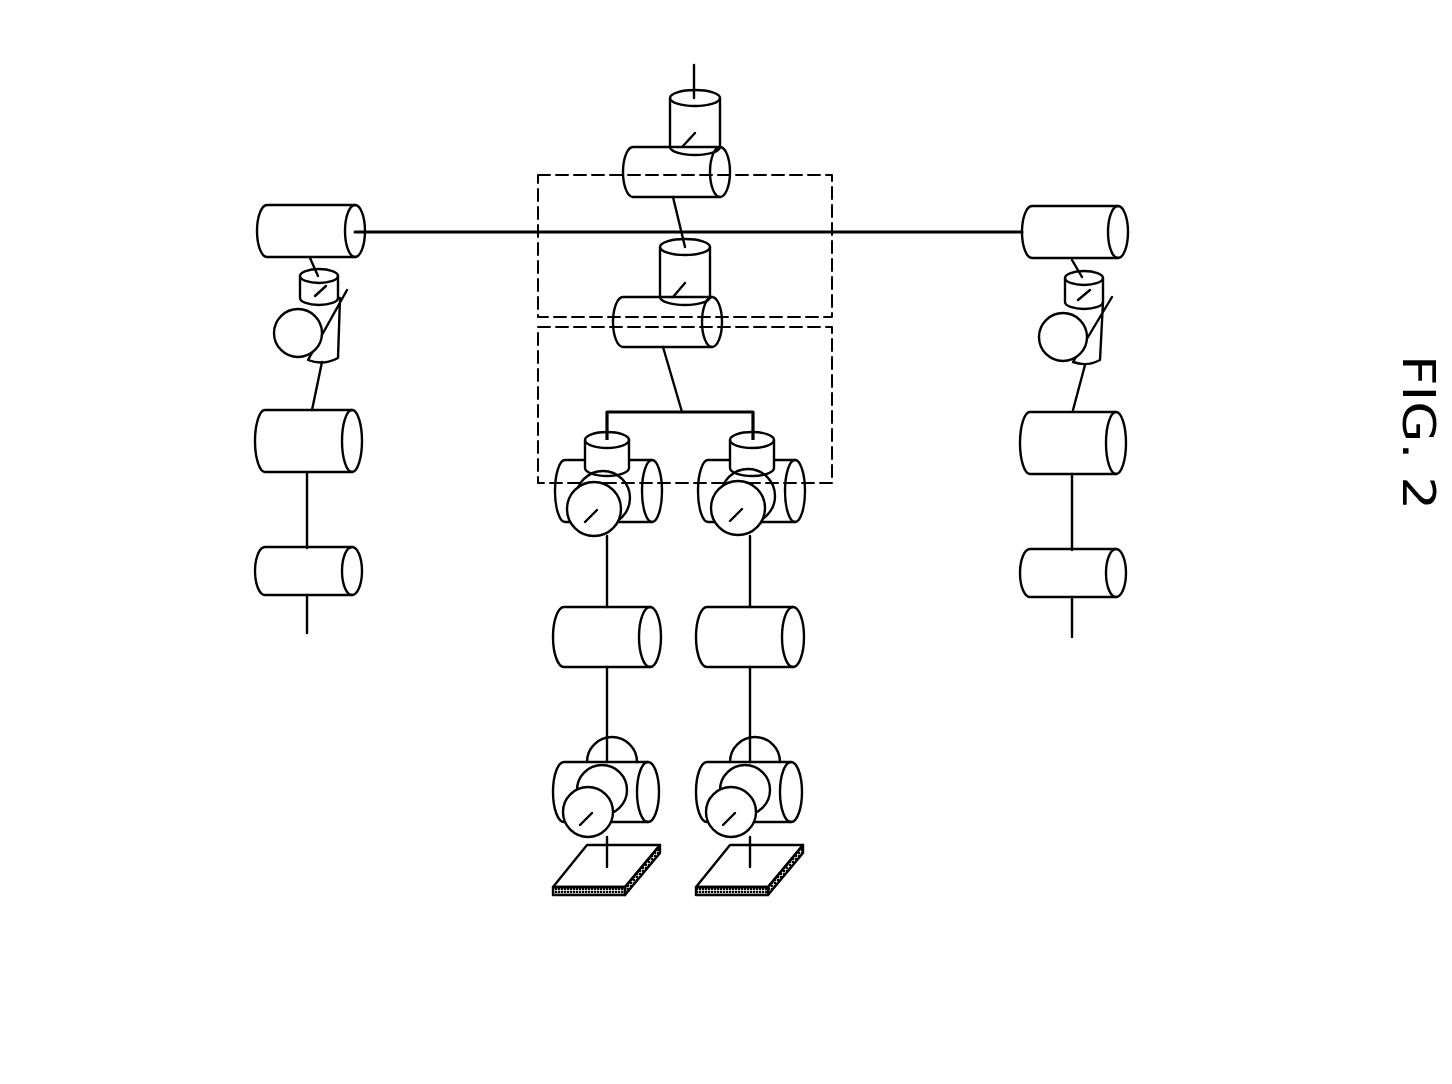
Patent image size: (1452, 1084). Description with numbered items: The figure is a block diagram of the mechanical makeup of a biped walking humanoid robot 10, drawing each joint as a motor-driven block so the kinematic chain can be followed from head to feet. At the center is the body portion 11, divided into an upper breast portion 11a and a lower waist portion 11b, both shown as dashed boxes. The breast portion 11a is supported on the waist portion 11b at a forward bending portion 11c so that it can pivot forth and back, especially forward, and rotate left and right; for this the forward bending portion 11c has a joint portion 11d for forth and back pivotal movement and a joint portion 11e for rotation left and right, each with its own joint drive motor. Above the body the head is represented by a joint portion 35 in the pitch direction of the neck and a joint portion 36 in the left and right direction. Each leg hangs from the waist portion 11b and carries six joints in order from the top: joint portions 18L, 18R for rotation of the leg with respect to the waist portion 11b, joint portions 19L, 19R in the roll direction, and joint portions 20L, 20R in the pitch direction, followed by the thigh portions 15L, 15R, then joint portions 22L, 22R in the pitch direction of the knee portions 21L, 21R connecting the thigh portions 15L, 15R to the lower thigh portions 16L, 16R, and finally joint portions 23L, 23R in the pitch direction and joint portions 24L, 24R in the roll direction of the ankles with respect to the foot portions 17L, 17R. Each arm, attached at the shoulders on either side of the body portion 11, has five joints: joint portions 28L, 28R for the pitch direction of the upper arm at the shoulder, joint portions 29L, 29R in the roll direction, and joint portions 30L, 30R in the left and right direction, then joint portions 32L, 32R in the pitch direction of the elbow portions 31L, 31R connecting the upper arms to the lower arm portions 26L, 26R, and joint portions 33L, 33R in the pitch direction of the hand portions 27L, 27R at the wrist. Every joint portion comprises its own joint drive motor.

The biped walking humanoid robot 10 is at (885, 125).
The body portion 11 is at (688, 329).
The breast portion 11a is at (835, 195).
The waist portion 11b is at (835, 353).
The forward bending portion 11c is at (812, 322).
The joint portion for forth and back pivotal movement 11d is at (645, 293).
The joint portion for rotation left and right 11e is at (703, 288).
The thigh portion 15R is at (607, 573).
The thigh portion 15L is at (750, 575).
The lower thigh portion 16R is at (608, 708).
The lower thigh portion 16L is at (750, 708).
The foot portion 17R is at (595, 877).
The foot portion 17L is at (740, 877).
The joint portion for rotation of the leg portion 18R is at (590, 450).
The joint portion for rotation of the leg portion 18L is at (776, 445).
The joint portion in the roll direction of the leg portion 19R is at (565, 522).
The joint portion in the roll direction of the leg portion 19L is at (748, 522).
The joint portion in the pitch direction of the leg portion 20R is at (555, 468).
The joint portion in the pitch direction of the leg portion 20L is at (805, 487).
The knee portion 21R is at (524, 631).
The knee portion 21L is at (827, 623).
The joint portion in the pitch direction of the knee portion 22R is at (552, 642).
The joint portion in the pitch direction of the knee portion 22L is at (797, 633).
The joint portion in the pitch direction of the ankle portion 23R is at (555, 785).
The joint portion in the pitch direction of the ankle portion 23L is at (797, 795).
The joint portion in the roll direction of the ankle portion 24R is at (585, 822).
The joint portion in the roll direction of the ankle portion 24L is at (745, 823).
The lower arm portion 26R is at (305, 512).
The lower arm portion 26L is at (1073, 492).
The hand portion 27R is at (307, 622).
The hand portion 27L is at (1072, 612).
The joint portion for the pitch direction of the upper arm portion at the shoulder 28R is at (268, 218).
The joint portion for the pitch direction of the upper arm portion at the shoulder 28L is at (1125, 228).
The joint portion in the roll direction of the upper arm portion at the shoulder 29R is at (295, 302).
The joint portion in the roll direction of the upper arm portion at the shoulder 29L is at (1102, 313).
The joint portion in the left and right direction of the upper arm portion at the sh 30R is at (345, 290).
The joint portion in the left and right direction of the upper arm portion at the sh 30L is at (1097, 290).
The elbow portion 31R is at (241, 447).
The elbow portion 31L is at (1121, 416).
The joint portion in the pitch direction of the elbow portion 32R is at (272, 452).
The joint portion in the pitch direction of the elbow portion 32L is at (1117, 452).
The joint portion in the pitch direction of the hand portion at the wrist 33R is at (290, 590).
The joint portion in the pitch direction of the hand portion at the wrist 33L is at (1100, 553).
The joint portion in the pitch direction of the neck 35 is at (655, 153).
The joint portion in the left and right direction 36 is at (715, 128).